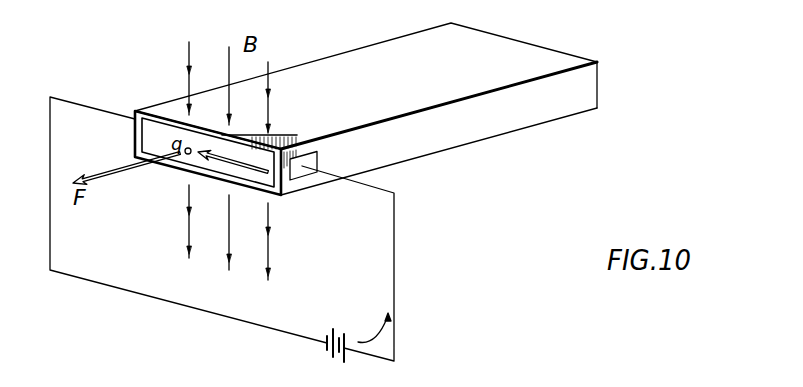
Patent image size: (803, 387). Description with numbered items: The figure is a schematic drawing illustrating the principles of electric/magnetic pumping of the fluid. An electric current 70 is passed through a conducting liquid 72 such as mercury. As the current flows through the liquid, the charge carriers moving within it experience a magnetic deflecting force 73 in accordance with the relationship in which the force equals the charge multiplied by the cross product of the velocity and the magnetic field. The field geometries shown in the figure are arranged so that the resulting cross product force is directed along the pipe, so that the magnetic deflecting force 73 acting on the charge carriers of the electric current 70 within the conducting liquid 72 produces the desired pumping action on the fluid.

The electric current 70 is at (262, 163).
The conducting liquid 72 is at (535, 108).
The magnetic deflecting force 73 is at (143, 163).